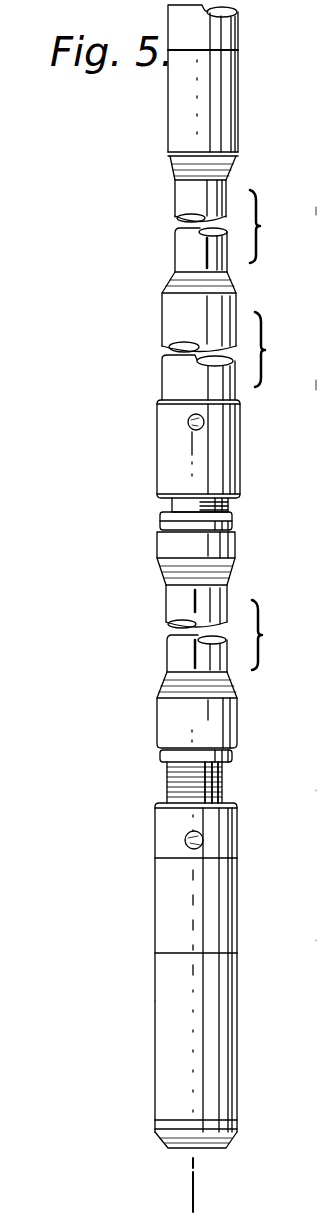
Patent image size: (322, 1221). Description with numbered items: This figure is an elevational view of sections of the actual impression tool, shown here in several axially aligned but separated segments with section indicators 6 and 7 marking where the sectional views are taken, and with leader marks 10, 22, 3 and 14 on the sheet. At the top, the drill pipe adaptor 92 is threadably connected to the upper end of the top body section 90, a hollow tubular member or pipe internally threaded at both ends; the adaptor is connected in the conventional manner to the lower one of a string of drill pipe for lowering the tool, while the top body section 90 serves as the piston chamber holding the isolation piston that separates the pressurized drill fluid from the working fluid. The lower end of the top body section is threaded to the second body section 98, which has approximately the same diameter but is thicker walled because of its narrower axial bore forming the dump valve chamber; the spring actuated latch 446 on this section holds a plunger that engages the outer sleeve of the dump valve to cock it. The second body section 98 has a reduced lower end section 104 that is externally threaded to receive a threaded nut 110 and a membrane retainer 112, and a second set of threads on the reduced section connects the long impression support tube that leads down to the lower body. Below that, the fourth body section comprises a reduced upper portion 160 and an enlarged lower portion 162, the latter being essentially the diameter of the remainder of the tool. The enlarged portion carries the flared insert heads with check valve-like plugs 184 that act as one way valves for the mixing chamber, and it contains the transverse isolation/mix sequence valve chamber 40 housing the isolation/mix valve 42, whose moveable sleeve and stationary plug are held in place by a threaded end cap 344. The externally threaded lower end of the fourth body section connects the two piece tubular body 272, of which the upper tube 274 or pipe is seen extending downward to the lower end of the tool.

The drill pipe adaptor 92 is at (185, 193).
The section line for FIG. 6 is at (185, 253).
The top body section 90 is at (176, 310).
The check valve-like plug 184 is at (309, 298).
The spring actuated latch 446 is at (182, 418).
The second body section 98 is at (172, 460).
The reduced lower end section 104 is at (228, 506).
The threaded nut 110 is at (160, 519).
The membrane retainer 112 is at (235, 543).
The tool assembly 10 is at (144, 565).
The section line for FIG. 7 is at (185, 652).
The coupling member 22 is at (228, 598).
The reduced upper portion 160 is at (225, 779).
The threaded end cap 344 is at (309, 795).
The enlarged lower portion 162 is at (157, 822).
The isolation/mix sequence valve chamber 40 is at (204, 836).
The isolation/mix valve 42 is at (172, 843).
The upper tube 274 is at (165, 911).
The two piece tubular body 272 is at (140, 1006).
The lower end 14 is at (226, 1146).
The adjacent element 3 is at (318, 945).